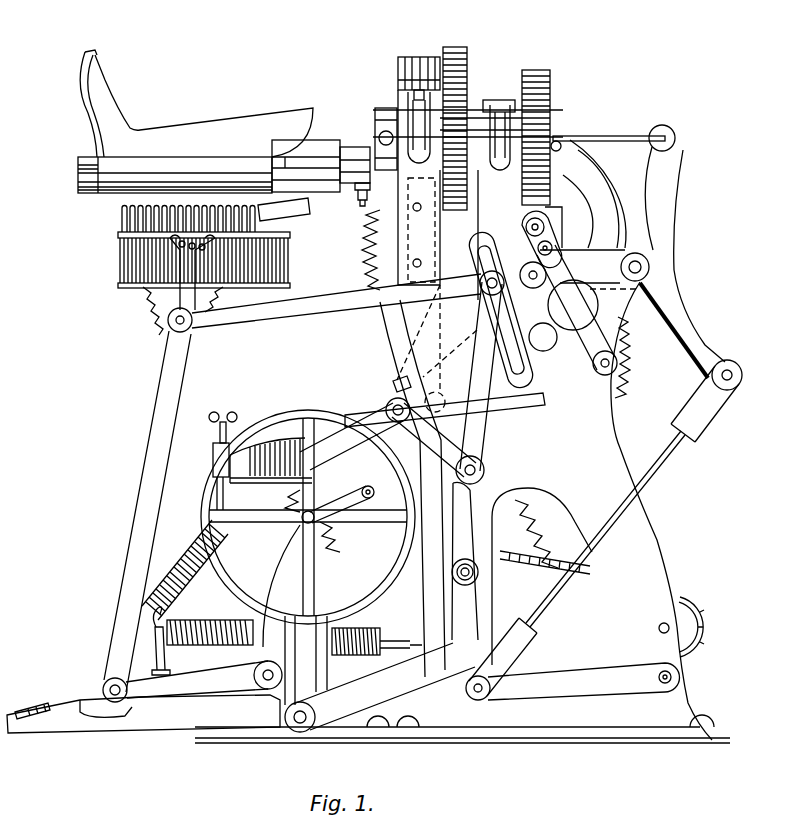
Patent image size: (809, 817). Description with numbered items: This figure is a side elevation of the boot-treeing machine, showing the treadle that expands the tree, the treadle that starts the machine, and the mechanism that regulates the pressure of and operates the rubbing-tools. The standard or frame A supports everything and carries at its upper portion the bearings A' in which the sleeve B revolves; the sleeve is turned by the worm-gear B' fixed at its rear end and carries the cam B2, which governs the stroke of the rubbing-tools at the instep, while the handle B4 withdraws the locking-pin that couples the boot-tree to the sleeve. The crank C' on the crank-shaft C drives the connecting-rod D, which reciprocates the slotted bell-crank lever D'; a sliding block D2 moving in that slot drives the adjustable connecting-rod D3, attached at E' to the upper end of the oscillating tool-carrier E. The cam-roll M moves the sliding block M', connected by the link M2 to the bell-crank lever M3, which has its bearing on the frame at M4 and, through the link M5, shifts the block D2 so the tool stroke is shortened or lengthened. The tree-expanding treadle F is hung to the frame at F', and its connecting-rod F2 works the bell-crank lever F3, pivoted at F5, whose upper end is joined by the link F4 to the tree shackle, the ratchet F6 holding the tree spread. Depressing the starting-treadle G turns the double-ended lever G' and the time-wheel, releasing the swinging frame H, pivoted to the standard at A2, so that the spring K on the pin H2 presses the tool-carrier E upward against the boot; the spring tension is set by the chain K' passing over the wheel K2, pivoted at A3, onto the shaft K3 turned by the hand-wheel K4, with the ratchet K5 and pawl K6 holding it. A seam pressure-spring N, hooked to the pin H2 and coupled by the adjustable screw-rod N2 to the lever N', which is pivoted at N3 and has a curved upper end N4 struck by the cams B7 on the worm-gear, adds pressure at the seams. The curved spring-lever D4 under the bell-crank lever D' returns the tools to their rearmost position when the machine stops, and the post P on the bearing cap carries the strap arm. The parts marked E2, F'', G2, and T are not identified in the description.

The standard or frame A is at (460, 417).
The bearings A' is at (434, 115).
The swinging-frame pivot A2 is at (258, 697).
The wheel pivot A3 is at (662, 624).
The sleeve B is at (444, 99).
The worm-gear B' is at (548, 120).
The cam B2 is at (478, 32).
The handle B4 is at (390, 130).
The cams B7 is at (562, 141).
The crank-shaft C is at (520, 220).
The crank C' is at (564, 246).
The connecting-rod D is at (576, 307).
The slotted bell-crank lever D' is at (586, 365).
The sliding block D2 is at (533, 309).
The adjustable connecting-rod D3 is at (330, 313).
The curved spring-lever D4 is at (545, 398).
The oscillating tool-carrier E is at (147, 511).
The connecting-rod attachment E' is at (153, 333).
The brush carrier E2 is at (183, 285).
The treadle F is at (584, 681).
The treadle pivot F' is at (32, 699).
The pivot F'' is at (700, 681).
The connecting-rod F2 is at (705, 412).
The bell-crank lever F3 is at (728, 362).
The link F4 is at (676, 138).
The bell-crank pivot F5 is at (650, 267).
The ratchet F6 is at (290, 652).
The starting-treadle G is at (241, 688).
The double-ended lever G' is at (462, 561).
The pivot G2 is at (473, 575).
The swinging frame H is at (192, 682).
The pin H2 is at (166, 660).
The spring K is at (210, 621).
The chain K' is at (546, 576).
The wheel K2 is at (690, 598).
The shaft K3 is at (304, 520).
The hand-wheel K4 is at (318, 410).
The ratchet K5 is at (317, 522).
The pawl K6 is at (328, 488).
The cam-roll M is at (423, 284).
The sliding block M' is at (389, 226).
The link M2 is at (433, 315).
The bell-crank lever M3 is at (400, 385).
The bell-crank bearing M4 is at (410, 420).
The link M5 is at (477, 437).
The seam pressure-spring N is at (185, 570).
The lever N' is at (316, 443).
The adjustable screw-rod N2 is at (212, 461).
The lever pivot N3 is at (538, 250).
The curved upper end N4 is at (594, 194).
The post P is at (419, 65).
The ratchet gear T is at (363, 262).